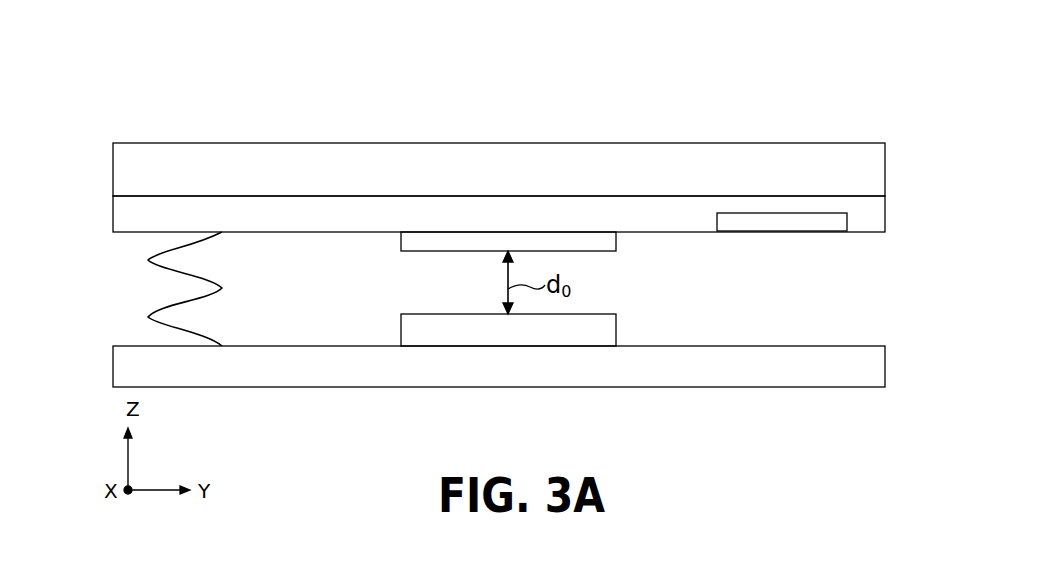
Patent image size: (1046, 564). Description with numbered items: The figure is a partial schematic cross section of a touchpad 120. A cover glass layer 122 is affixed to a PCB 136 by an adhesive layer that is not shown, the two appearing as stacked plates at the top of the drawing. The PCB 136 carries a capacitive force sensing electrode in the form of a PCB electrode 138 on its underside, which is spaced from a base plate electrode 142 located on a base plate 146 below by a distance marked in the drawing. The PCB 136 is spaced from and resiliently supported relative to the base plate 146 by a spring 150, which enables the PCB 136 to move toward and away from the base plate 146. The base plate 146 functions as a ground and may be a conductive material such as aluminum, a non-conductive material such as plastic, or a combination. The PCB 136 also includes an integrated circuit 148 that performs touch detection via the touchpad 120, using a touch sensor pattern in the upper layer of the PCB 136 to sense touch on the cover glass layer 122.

The touchpad 120 is at (163, 77).
The cover glass layer 122 is at (885, 184).
The PCB 136 is at (113, 222).
The PCB electrode 138 is at (596, 252).
The base plate electrode 142 is at (420, 313).
The base plate 146 is at (113, 372).
The integrated circuit 148 is at (777, 227).
The spring 150 is at (148, 317).